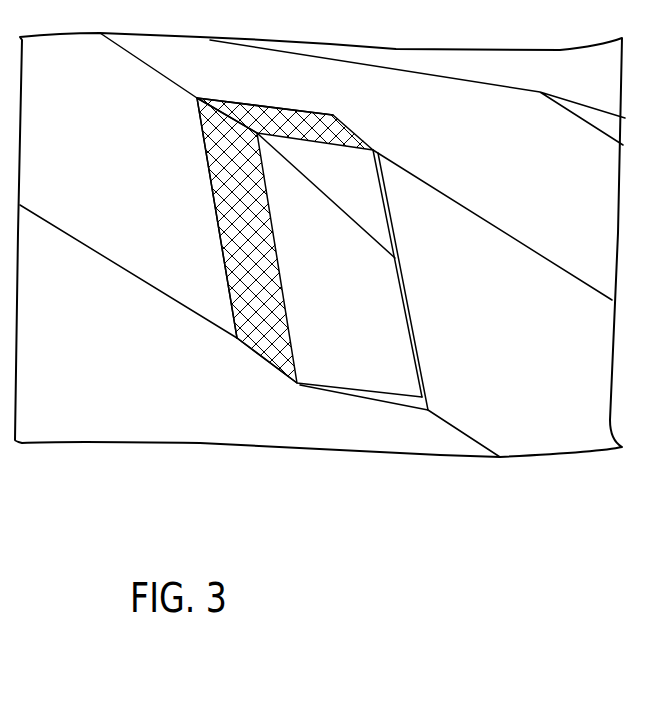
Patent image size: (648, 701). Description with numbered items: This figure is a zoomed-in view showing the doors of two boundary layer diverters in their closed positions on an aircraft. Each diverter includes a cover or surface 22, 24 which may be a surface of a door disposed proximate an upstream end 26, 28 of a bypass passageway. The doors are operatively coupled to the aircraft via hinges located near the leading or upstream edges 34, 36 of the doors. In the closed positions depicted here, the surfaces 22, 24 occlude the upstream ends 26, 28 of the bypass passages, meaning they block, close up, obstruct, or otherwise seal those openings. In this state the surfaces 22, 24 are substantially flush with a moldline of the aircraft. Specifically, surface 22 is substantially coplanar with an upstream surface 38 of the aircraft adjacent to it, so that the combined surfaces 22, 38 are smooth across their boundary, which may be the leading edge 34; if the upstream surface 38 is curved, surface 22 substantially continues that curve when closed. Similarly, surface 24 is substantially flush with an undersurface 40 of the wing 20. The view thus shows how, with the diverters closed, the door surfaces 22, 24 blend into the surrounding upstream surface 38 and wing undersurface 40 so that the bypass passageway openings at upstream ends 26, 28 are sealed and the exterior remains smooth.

The wing 20 is at (583, 112).
The surface 22 is at (258, 241).
The surface 24 is at (298, 134).
The upstream end 26 is at (263, 357).
The upstream end 28 is at (357, 134).
The leading edge 34 is at (200, 128).
The leading edge 36 is at (263, 103).
The upstream surface 38 is at (164, 223).
The undersurface 40 is at (517, 160).